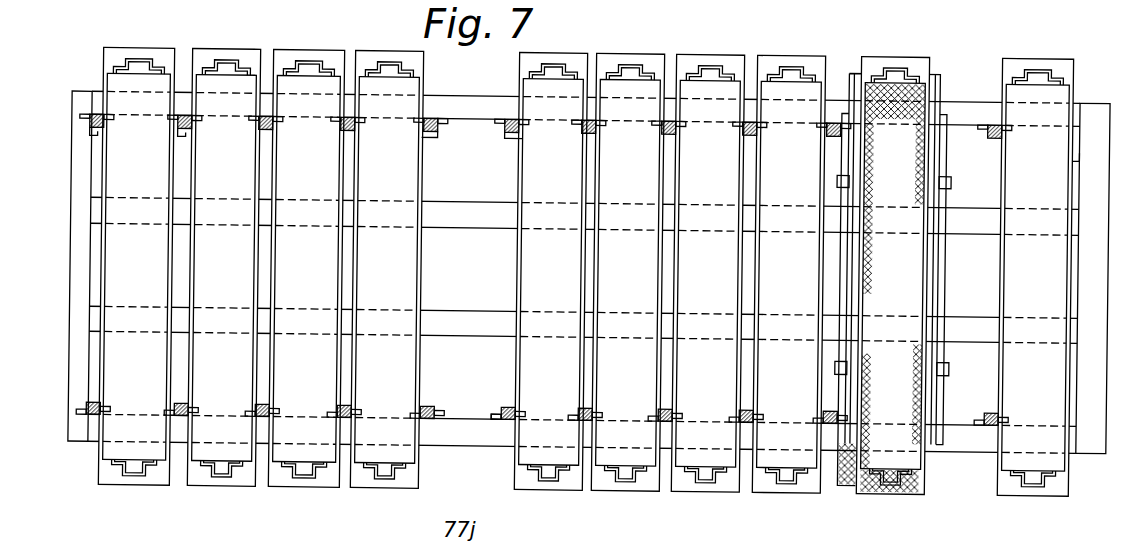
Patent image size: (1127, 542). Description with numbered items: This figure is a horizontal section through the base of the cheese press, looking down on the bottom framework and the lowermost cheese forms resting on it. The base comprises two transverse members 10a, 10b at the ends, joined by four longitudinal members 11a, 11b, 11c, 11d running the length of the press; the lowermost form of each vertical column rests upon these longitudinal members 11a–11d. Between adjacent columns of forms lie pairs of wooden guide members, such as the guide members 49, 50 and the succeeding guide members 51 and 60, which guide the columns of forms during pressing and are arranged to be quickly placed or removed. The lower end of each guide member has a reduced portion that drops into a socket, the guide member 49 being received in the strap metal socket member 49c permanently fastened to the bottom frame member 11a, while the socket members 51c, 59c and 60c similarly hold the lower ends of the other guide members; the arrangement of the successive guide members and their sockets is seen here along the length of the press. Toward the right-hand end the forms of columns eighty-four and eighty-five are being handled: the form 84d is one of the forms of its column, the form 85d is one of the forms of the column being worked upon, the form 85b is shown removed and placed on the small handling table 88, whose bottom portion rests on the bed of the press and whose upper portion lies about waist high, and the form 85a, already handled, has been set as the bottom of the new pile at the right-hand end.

The transverse member 10a is at (70, 165).
The transverse member 10b is at (1093, 168).
The longitudinal member 11a is at (477, 82).
The longitudinal member 11b is at (472, 197).
The longitudinal member 11c is at (435, 312).
The longitudinal member 11d is at (447, 448).
The guide member 49 is at (90, 123).
The strap metal socket member 49c is at (90, 140).
The guide member 50 is at (88, 408).
The guide member 51 is at (186, 128).
The socket member 51c is at (181, 134).
The socket member 59c is at (510, 140).
The guide member 60 is at (497, 412).
The socket member 60c is at (502, 407).
The cheese form 84d is at (720, 457).
The cheese form 85d is at (807, 463).
The cheese form 85b is at (923, 478).
The cheese form 85a is at (1063, 472).
The handling table 88 is at (943, 393).